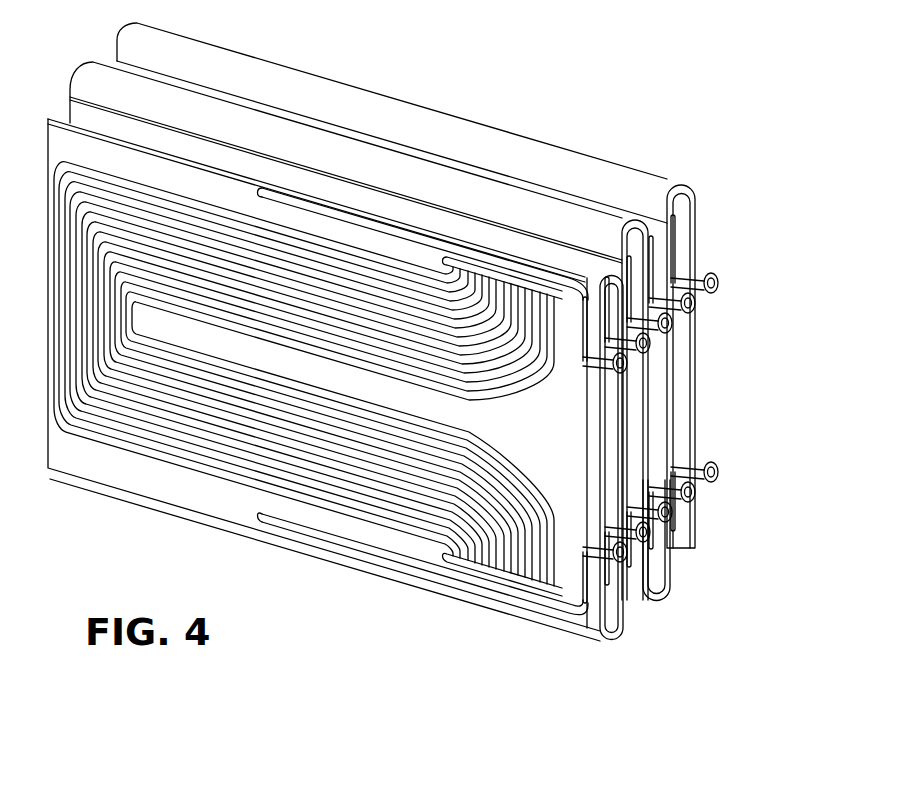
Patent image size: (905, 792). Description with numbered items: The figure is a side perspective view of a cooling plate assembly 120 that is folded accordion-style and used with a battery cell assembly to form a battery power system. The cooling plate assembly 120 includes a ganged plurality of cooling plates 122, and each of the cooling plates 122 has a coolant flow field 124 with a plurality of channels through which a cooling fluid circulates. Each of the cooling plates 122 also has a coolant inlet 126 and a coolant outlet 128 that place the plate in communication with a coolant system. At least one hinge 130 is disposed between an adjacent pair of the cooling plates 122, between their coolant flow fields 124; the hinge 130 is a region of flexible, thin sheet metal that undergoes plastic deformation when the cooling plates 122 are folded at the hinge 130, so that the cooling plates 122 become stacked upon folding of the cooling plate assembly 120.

The cooling plate assembly 120 is at (693, 147).
The cooling plates 122 is at (620, 420).
The coolant flow field 124 is at (355, 338).
The coolant inlet 126 is at (590, 549).
The coolant outlet 128 is at (592, 345).
The hinge 130 is at (344, 138).